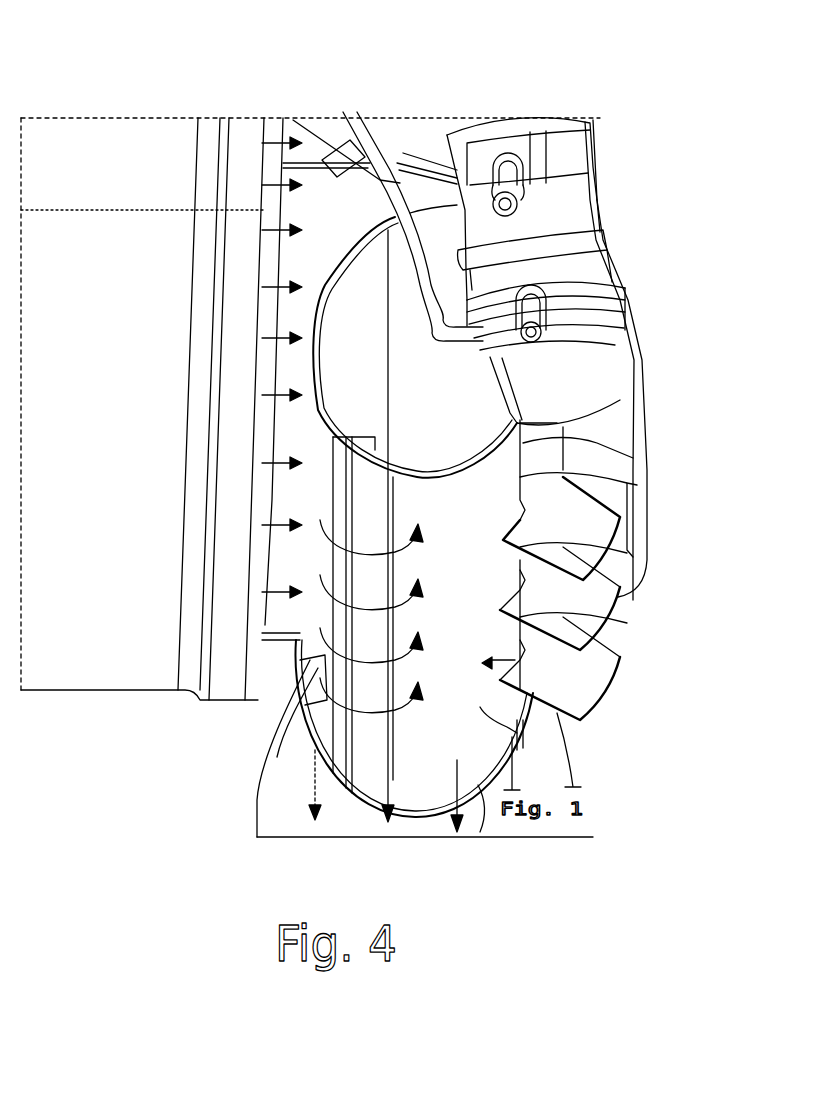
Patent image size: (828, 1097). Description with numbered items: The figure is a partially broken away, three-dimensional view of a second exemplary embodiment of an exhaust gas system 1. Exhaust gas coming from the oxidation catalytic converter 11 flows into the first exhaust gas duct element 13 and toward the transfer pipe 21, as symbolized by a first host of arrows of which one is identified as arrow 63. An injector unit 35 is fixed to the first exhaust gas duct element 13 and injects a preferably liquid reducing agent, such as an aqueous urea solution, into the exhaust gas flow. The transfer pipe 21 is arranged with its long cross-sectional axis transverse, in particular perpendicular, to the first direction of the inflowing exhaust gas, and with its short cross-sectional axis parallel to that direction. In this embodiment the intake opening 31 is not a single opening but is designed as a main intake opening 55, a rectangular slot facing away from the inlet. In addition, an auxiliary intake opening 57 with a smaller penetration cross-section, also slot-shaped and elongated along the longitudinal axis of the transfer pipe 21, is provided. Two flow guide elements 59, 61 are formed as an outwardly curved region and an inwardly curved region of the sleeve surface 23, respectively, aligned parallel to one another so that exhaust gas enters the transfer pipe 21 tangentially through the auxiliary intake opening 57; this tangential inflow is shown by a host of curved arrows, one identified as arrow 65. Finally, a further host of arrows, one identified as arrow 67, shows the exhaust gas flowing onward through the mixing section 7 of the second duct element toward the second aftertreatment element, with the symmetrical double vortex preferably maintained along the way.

The exhaust gas system 1 is at (340, 82).
The mixing section 7 is at (607, 837).
The oxidation catalytic converter 11 is at (100, 680).
The first exhaust gas duct element 13 is at (648, 320).
The transfer pipe 21 is at (607, 680).
The sleeve surface 23 is at (527, 733).
The intake opening 31 is at (637, 463).
The injector unit 35 is at (583, 146).
The main intake opening 55 is at (637, 535).
The auxiliary intake opening 57 is at (362, 240).
The flow guide element 59 is at (350, 787).
The flow guide element 61 is at (313, 410).
The arrow 63 is at (290, 118).
The curved arrow 65 is at (295, 692).
The arrow 67 is at (487, 830).